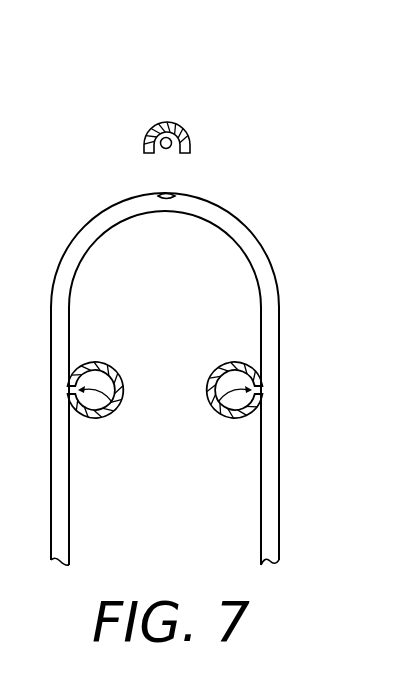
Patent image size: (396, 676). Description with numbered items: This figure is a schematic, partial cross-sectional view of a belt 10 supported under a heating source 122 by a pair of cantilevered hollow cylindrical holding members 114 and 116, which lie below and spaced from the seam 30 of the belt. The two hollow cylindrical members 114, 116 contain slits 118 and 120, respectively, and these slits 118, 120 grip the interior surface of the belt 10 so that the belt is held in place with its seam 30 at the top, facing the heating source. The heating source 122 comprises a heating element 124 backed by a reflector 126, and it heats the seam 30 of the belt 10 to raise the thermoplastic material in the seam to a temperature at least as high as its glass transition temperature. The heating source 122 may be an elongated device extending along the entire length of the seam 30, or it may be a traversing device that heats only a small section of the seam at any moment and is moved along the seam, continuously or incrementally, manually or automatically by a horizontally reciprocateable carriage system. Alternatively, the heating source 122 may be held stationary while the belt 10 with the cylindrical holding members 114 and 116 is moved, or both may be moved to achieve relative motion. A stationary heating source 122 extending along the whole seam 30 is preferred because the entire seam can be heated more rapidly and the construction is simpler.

The belt 10 is at (293, 276).
The seam 30 is at (173, 194).
The cantilevered hollow cylindrical holding member 114 is at (103, 392).
The cantilevered hollow cylindrical holding member 116 is at (227, 392).
The slit 118 is at (107, 408).
The slit 120 is at (219, 408).
The heating source 122 is at (173, 129).
The heating element 124 is at (165, 150).
The reflector 126 is at (153, 127).